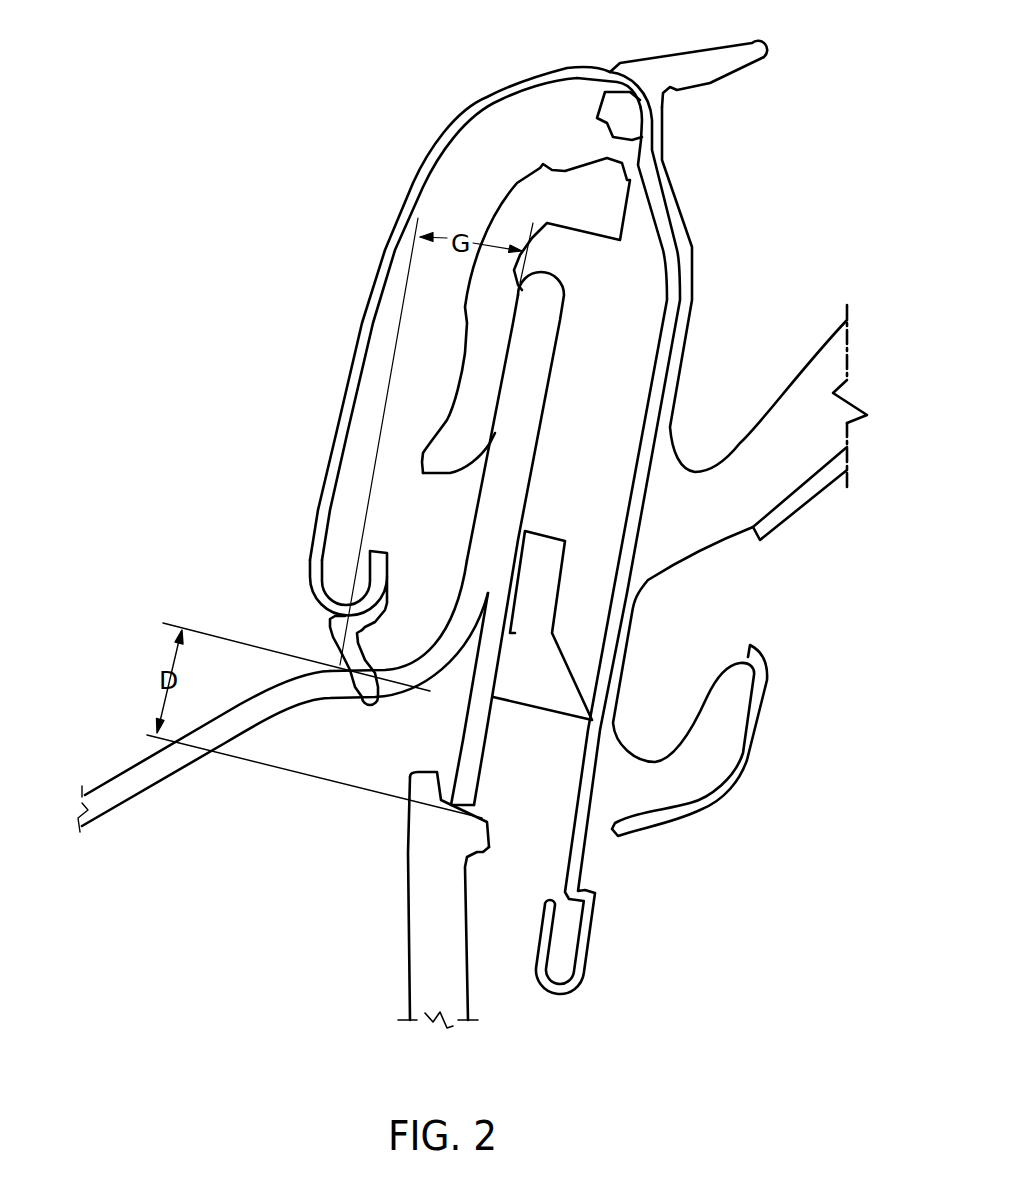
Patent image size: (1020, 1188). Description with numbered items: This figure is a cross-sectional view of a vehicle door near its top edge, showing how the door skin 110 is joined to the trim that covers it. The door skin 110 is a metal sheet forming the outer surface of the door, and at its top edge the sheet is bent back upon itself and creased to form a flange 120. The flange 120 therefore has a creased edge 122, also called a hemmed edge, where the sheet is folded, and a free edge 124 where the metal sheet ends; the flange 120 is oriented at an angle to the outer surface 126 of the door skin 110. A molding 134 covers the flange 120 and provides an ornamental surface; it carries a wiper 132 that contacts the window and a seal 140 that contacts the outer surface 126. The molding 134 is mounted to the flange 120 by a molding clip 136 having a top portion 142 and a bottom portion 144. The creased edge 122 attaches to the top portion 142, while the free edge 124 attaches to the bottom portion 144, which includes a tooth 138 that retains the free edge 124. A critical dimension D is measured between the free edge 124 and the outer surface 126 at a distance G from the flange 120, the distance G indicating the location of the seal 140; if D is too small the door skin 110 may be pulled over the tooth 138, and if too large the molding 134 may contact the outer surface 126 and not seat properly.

The door skin 110 is at (133, 790).
The flange 120 is at (480, 693).
The creased edge 122 is at (562, 305).
The free edge 124 is at (480, 780).
The outer surface 126 is at (344, 668).
The wiper 132 is at (687, 562).
The molding 134 is at (415, 186).
The molding clip 136 is at (483, 327).
The tooth 138 is at (412, 812).
The seal 140 is at (342, 662).
The top portion 142 is at (590, 160).
The bottom portion 144 is at (408, 905).